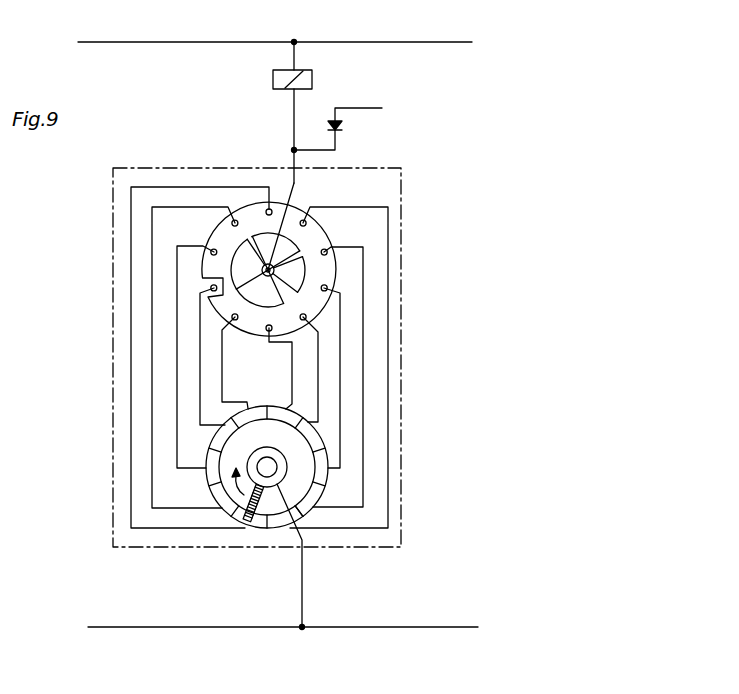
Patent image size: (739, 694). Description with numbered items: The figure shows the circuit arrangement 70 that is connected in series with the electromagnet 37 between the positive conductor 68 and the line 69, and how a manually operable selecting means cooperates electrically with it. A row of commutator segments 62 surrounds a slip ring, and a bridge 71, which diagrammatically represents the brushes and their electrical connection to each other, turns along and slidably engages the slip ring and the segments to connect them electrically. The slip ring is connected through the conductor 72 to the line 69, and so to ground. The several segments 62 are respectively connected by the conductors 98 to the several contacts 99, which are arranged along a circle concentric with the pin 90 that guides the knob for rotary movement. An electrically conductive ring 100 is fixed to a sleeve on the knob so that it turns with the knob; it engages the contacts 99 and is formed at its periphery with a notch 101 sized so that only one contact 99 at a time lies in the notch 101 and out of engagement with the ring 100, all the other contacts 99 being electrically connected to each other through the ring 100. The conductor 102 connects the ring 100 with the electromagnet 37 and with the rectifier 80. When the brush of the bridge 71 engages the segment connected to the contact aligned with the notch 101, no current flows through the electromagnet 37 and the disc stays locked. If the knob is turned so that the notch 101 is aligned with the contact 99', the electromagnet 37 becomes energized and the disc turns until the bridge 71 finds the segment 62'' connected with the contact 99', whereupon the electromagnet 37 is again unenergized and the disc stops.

The positive conductor 68 is at (137, 42).
The electromagnet 37 is at (273, 75).
The rectifier 80 is at (343, 128).
The contact 99 is at (264, 171).
The conductor 102 is at (295, 182).
The contact 99' is at (293, 275).
The ring 100 is at (328, 272).
The pin 90 is at (275, 273).
The notch 101 is at (211, 289).
The conductors 98 is at (130, 380).
The circuit arrangement 70 is at (403, 450).
The bridge 71 is at (243, 503).
The commutator segments 62 is at (267, 500).
The commutator segment 62'' is at (328, 550).
The conductor 72 is at (302, 600).
The line 69 is at (208, 628).